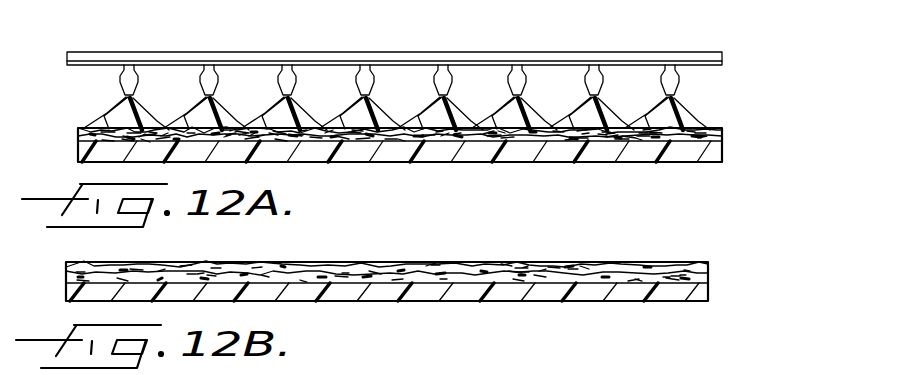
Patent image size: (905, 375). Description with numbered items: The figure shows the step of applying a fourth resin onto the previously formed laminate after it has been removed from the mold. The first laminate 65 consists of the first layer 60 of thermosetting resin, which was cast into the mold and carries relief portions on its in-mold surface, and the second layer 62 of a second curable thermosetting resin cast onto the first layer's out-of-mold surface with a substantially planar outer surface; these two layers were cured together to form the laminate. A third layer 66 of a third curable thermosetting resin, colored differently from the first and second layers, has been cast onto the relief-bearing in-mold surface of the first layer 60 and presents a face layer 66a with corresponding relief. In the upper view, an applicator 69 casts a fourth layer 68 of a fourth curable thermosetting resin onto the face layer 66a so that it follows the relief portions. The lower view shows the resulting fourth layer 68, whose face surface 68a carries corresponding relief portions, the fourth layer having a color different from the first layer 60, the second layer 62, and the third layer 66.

In FIG. 12A, the applicator 69 is at (670, 57).
In FIG. 12A, the fourth layer 68 is at (672, 120).
In FIG. 12A, the face layer 66a is at (122, 135).
In FIG. 12A, the first laminate 65 is at (758, 139).
In FIG. 12B, the first laminate 65 is at (770, 273).
In FIG. 12B, the face surface 68a is at (490, 267).
In FIG. 12B, the third layer 66 is at (484, 287).
In FIG. 12B, the first layer 60 is at (590, 301).
In FIG. 12B, the second layer 62 is at (683, 298).